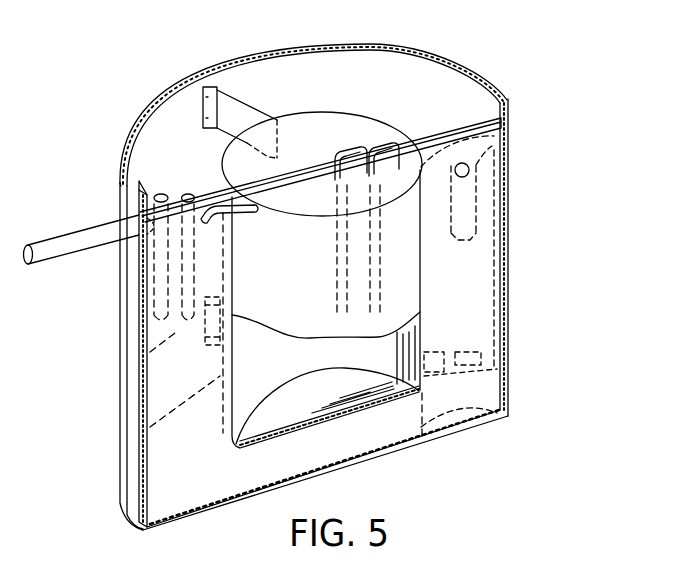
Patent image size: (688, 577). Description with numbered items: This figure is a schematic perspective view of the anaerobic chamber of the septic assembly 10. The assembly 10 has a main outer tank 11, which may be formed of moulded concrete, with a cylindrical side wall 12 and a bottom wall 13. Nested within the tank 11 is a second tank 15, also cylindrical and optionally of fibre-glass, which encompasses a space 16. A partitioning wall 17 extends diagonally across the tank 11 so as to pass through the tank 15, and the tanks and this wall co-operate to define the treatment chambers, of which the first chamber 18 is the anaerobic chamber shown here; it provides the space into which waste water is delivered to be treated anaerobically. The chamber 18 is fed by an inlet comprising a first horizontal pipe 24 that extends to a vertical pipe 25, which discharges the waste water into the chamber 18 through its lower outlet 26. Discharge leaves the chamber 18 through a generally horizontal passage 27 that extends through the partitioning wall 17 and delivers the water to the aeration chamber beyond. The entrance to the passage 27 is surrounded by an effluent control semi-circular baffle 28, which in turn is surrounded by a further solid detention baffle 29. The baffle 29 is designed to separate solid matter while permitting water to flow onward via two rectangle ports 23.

The assembly 10 is at (176, 82).
The main outer tank 11 is at (258, 56).
The cylindrical side wall 12 is at (512, 291).
The bottom wall 13 is at (466, 429).
The second tank 15 is at (399, 114).
The space 16 is at (355, 140).
The partitioning wall 17 is at (462, 126).
The first chamber 18 is at (141, 149).
The rectangle ports 23 is at (513, 332).
The first horizontal pipe 24 is at (58, 263).
The vertical pipe 25 is at (160, 295).
The lower outlet 26 is at (143, 370).
The passage 27 is at (470, 172).
The effluent control semi-circular baffle 28 is at (490, 207).
The solid detention baffle 29 is at (510, 128).